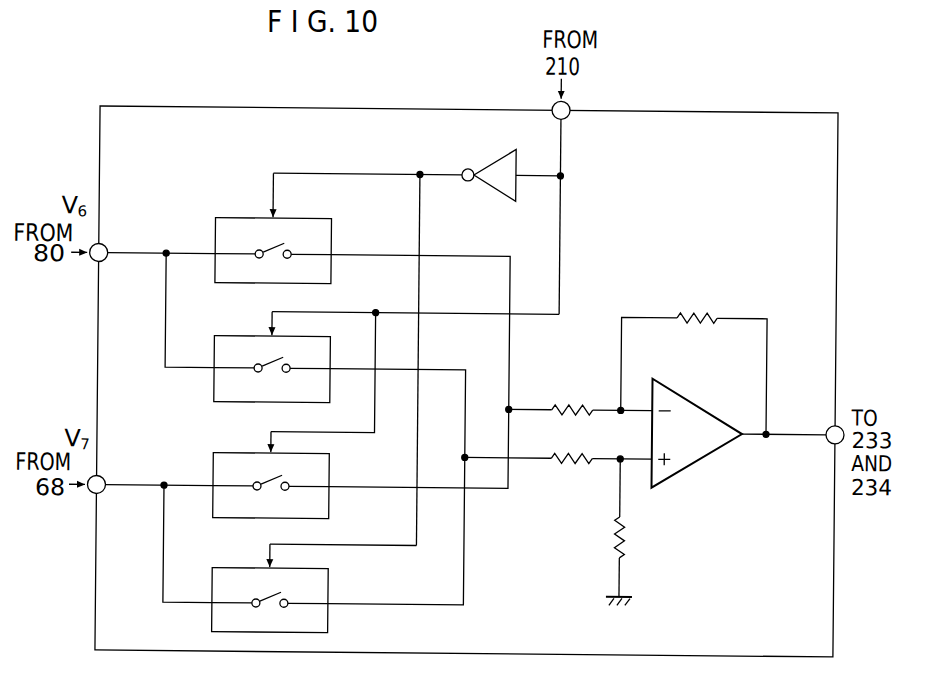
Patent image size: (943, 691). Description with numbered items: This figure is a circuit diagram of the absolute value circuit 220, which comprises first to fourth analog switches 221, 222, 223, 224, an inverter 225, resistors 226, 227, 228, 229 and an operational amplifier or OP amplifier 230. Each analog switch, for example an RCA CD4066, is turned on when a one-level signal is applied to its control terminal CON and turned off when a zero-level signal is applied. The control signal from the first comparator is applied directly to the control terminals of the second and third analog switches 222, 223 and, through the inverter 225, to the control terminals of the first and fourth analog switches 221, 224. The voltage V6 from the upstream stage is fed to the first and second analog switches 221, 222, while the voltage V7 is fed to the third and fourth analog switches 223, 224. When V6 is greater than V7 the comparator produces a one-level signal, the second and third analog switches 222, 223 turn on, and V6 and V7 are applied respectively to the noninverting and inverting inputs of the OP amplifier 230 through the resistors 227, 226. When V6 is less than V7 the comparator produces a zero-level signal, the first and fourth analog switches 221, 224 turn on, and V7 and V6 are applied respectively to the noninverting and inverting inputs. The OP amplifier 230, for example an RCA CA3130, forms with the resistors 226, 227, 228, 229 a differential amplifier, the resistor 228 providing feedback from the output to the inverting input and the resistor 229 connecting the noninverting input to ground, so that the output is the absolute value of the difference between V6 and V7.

The absolute value circuit 220 is at (704, 110).
The first analog switch 221 is at (299, 197).
The second analog switch 222 is at (331, 364).
The third analog switch 223 is at (330, 499).
The fourth analog switch 224 is at (330, 580).
The inverter 225 is at (478, 168).
The resistor 226 is at (588, 403).
The resistor 227 is at (560, 463).
The resistor 228 is at (720, 296).
The resistor 229 is at (627, 548).
The OP amplifier 230 is at (713, 413).